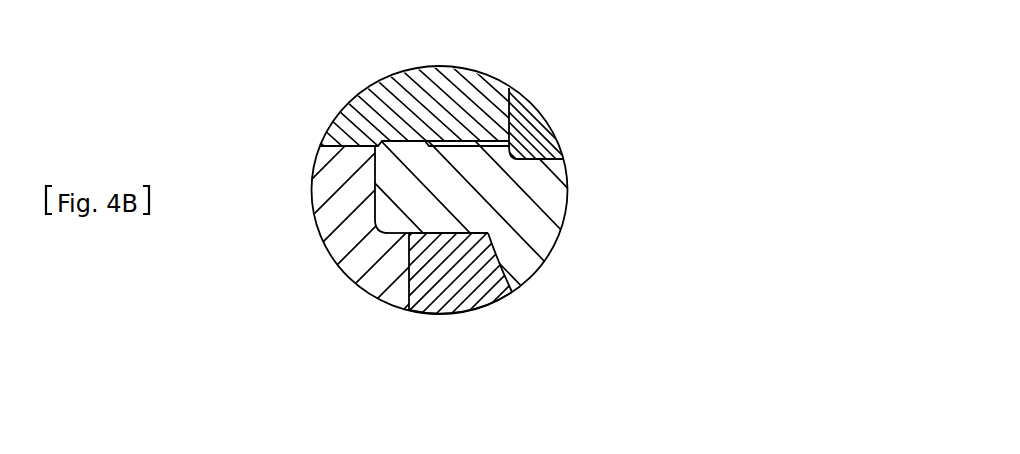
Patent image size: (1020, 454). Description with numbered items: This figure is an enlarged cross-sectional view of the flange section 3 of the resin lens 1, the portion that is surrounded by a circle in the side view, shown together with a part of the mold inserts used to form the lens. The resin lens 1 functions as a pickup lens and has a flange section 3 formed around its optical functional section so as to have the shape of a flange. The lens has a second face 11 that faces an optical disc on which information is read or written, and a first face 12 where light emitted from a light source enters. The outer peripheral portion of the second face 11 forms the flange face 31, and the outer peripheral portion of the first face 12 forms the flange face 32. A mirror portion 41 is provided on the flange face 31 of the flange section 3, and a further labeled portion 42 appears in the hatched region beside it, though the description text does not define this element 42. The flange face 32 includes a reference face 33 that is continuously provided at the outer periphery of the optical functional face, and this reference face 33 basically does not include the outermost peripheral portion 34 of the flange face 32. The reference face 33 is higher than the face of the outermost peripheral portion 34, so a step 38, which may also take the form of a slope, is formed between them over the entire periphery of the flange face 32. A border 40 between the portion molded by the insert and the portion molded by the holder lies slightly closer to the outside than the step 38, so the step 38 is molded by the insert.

The resin lens 1 is at (548, 205).
The flange section 3 is at (436, 225).
The second face 11 is at (476, 146).
The first face 12 is at (445, 238).
The flange face 31 is at (465, 146).
The flange face 32 is at (452, 300).
The reference face 33 is at (500, 275).
The outermost peripheral portion 34 is at (385, 229).
The step 38 is at (409, 248).
The border 40 is at (405, 234).
The mirror portion 41 is at (448, 138).
The upper left portion 42 is at (398, 135).